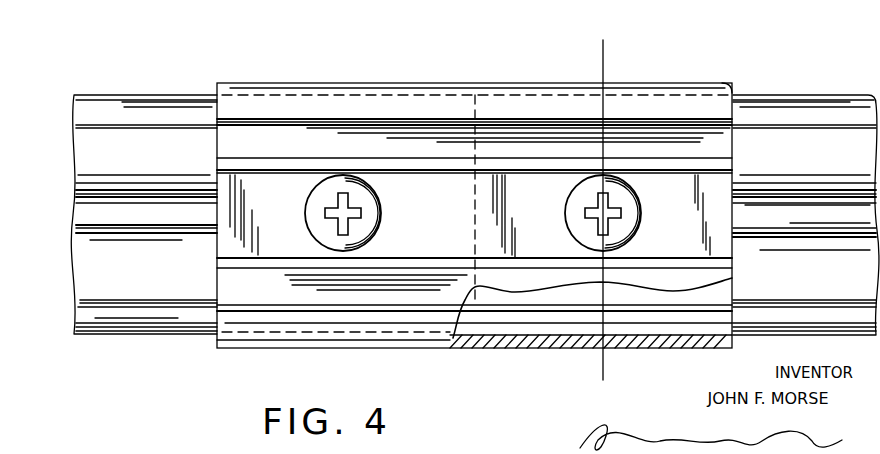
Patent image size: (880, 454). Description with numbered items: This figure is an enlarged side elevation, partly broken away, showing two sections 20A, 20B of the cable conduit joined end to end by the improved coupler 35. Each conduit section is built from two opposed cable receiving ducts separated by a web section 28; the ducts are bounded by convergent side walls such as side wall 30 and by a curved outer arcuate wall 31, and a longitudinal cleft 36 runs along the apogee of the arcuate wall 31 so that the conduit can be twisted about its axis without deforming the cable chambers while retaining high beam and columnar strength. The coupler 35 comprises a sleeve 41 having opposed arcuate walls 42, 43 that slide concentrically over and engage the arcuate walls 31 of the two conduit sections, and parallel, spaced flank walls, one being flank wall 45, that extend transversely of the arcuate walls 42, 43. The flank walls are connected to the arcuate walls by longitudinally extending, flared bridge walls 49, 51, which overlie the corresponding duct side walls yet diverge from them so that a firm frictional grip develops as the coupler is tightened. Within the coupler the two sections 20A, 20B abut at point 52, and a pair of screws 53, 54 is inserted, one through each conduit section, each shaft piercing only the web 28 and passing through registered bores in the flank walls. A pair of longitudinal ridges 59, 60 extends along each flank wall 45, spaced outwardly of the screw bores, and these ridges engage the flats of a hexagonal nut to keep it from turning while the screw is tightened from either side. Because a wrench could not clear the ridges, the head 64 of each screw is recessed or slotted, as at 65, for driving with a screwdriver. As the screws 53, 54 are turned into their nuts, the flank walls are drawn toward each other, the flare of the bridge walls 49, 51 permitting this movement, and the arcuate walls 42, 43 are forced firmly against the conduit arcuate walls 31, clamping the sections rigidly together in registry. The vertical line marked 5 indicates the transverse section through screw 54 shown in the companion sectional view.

The conduit section 20A is at (158, 91).
The conduit section 20B is at (811, 91).
The web section 28 is at (476, 210).
The side wall 30 is at (476, 216).
The arcuate wall 31 is at (196, 102).
The coupler 35 is at (483, 71).
The longitudinal cleft 36 is at (107, 93).
The sleeve 41 is at (699, 73).
The arcuate wall 42 is at (722, 84).
The arcuate wall 43 is at (678, 340).
The flank wall 45 is at (519, 216).
The bridge wall 49 is at (367, 140).
The bridge wall 51 is at (360, 295).
The abutment point 52 is at (476, 321).
The screw 53 is at (385, 201).
The screw 54 is at (645, 198).
The longitudinal ridge 59 is at (251, 163).
The longitudinal ridge 60 is at (262, 261).
The screw head 64 is at (318, 201).
The slot 65 is at (353, 216).
The section line 5- 5 is at (557, 40).